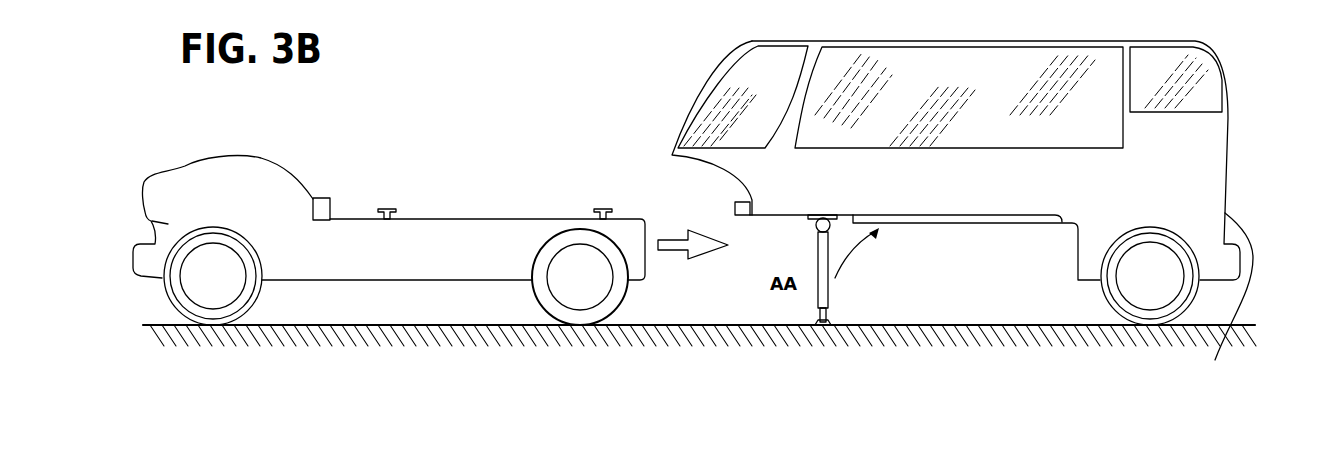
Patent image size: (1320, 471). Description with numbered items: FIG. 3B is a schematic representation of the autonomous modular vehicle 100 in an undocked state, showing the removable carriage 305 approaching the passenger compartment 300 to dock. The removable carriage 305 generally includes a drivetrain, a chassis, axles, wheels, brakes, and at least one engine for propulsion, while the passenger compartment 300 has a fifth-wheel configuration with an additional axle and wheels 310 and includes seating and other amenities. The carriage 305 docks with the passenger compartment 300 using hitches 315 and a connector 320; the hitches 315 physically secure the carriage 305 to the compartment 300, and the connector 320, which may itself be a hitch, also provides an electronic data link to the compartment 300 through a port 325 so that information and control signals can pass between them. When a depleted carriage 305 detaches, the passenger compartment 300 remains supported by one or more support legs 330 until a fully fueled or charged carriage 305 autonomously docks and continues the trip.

The autonomous modular vehicle 100 is at (521, 98).
The passenger compartment 300 is at (962, 215).
The removable carriage 305 is at (413, 280).
The wheels 310 is at (1107, 304).
The hitches 315 is at (387, 208).
The connector 320 is at (320, 198).
The port 325 is at (735, 205).
The support legs 330 is at (828, 298).